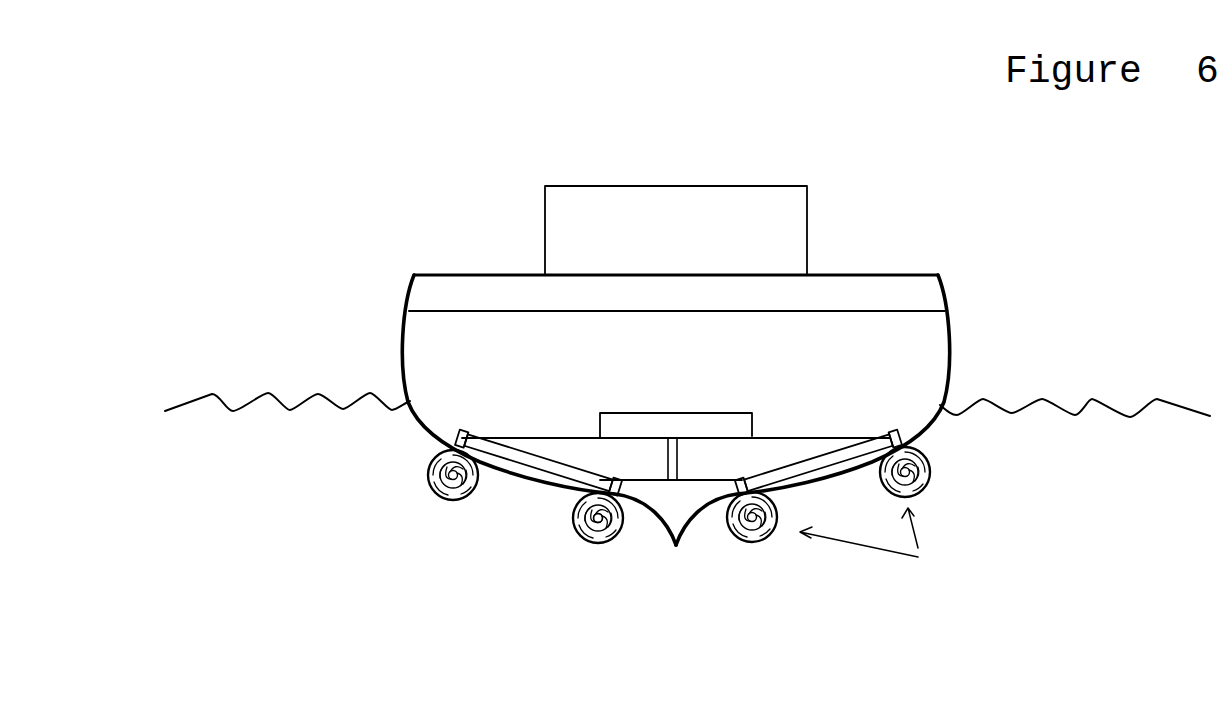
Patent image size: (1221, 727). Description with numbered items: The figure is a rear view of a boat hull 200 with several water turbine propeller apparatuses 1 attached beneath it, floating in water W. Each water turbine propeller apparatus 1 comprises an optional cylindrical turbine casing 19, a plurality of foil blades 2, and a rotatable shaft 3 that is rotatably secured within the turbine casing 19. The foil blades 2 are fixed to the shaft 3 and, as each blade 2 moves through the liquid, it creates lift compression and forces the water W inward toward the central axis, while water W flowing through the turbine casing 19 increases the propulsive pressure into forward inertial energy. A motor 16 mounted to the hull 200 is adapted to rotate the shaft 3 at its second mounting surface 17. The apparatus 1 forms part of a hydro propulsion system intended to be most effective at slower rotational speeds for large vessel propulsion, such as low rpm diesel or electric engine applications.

The water turbine propeller apparatus 1 is at (777, 532).
The foil blades 2 is at (608, 538).
The rotatable shaft 3 is at (598, 521).
The motor 16 is at (670, 413).
The second mounting surface 17 is at (543, 438).
The turbine casing 19 is at (932, 470).
The hull 200 is at (530, 482).
The water W is at (1092, 399).